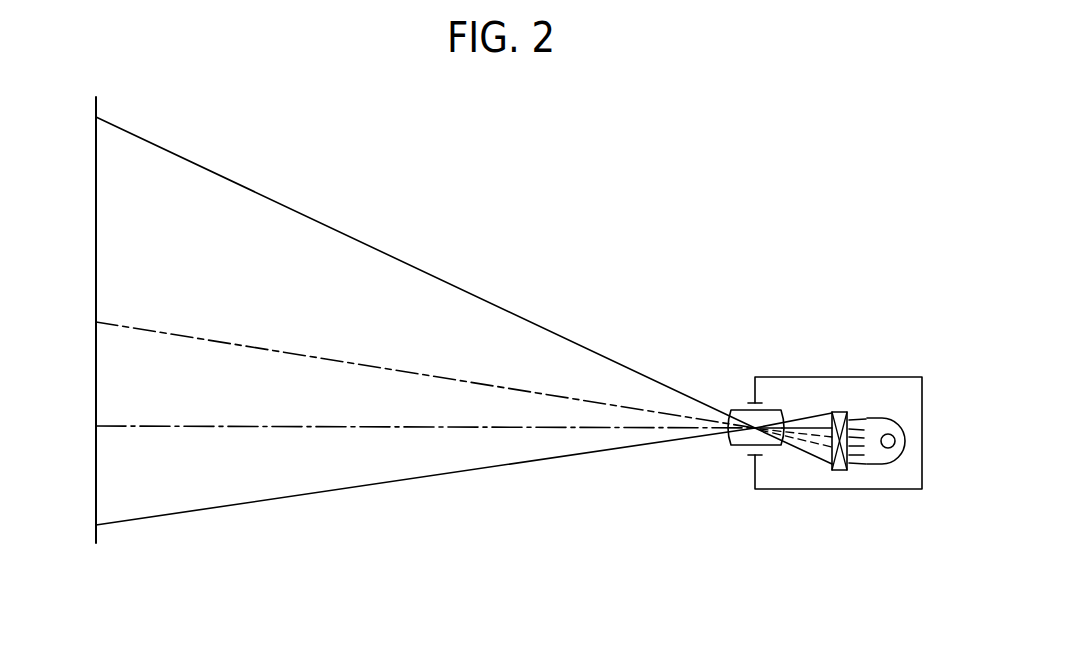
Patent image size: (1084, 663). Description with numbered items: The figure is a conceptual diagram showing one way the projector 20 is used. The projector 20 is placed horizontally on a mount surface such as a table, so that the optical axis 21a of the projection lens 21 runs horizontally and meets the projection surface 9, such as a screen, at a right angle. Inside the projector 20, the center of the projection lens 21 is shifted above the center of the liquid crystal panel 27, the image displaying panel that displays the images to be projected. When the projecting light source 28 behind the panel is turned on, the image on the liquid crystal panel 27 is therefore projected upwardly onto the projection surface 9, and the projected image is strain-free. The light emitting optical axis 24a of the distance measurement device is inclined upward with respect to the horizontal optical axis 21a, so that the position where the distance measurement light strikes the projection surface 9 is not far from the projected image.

The projection surface 9 is at (96, 240).
The projector 20 is at (883, 368).
The projection lens 21 is at (735, 410).
The optical axis of the projection lens 21a is at (200, 426).
The light emitting optical axis 24a is at (218, 340).
The liquid crystal panel 27 is at (838, 412).
The projecting light source 28 is at (875, 463).